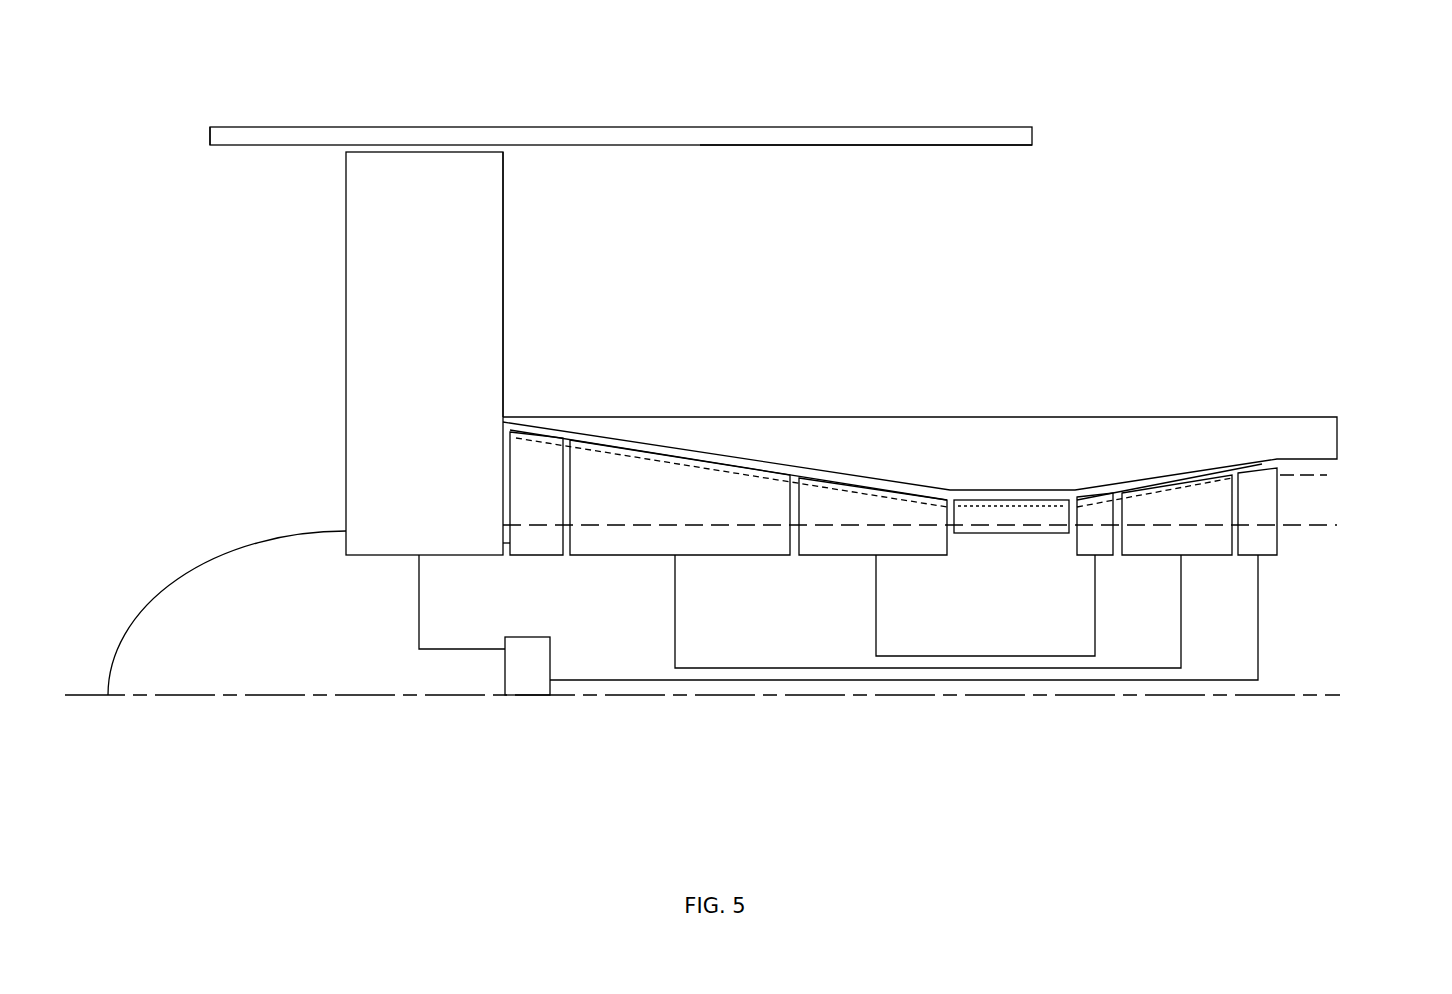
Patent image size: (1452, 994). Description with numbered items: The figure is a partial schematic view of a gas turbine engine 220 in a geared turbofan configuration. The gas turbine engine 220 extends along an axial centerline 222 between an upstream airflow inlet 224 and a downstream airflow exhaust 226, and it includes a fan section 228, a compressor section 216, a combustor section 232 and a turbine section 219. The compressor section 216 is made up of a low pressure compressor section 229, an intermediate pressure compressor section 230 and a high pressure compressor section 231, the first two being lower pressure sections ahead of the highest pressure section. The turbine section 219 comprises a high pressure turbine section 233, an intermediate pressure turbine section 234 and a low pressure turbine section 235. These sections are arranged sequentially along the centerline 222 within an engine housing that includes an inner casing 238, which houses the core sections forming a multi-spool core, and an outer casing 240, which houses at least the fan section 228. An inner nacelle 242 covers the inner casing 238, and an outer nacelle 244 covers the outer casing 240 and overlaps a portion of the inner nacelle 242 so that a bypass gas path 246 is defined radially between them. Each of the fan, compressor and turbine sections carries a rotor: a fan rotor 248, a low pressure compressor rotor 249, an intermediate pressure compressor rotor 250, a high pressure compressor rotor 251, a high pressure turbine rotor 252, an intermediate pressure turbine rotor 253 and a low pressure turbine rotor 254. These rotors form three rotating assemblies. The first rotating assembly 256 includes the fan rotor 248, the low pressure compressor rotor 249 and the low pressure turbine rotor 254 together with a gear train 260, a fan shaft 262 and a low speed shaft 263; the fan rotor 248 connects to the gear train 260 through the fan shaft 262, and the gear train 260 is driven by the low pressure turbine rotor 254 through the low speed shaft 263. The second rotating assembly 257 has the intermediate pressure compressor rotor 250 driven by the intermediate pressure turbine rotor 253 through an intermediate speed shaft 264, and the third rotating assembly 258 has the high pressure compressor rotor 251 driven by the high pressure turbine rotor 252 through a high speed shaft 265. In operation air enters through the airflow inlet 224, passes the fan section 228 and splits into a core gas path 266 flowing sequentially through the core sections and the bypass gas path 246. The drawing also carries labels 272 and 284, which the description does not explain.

The compressor section 216 is at (643, 335).
The turbine section 219 is at (1232, 357).
The gas turbine engine 220 is at (160, 105).
The axial centerline 222 is at (1342, 700).
The upstream airflow inlet 224 is at (209, 146).
The downstream airflow exhaust 226 is at (1330, 470).
The fan section 228 is at (505, 264).
The low pressure compressor section 229 is at (543, 425).
The intermediate pressure compressor section 230 is at (649, 445).
The high pressure compressor section 231 is at (867, 486).
The combustor section 232 is at (992, 494).
The high pressure turbine section 233 is at (1098, 488).
The intermediate pressure turbine section 234 is at (1180, 473).
The low pressure turbine section 235 is at (1256, 460).
The inner casing 238 is at (756, 460).
The outer casing 240 is at (640, 134).
The inner nacelle 242 is at (1321, 414).
The outer nacelle 244 is at (870, 124).
The bypass gas path 246 is at (742, 276).
The fan rotor 248 is at (403, 557).
The low pressure compressor rotor 249 is at (530, 557).
The intermediate pressure compressor rotor 250 is at (627, 557).
The high pressure compressor rotor 251 is at (825, 557).
The high pressure turbine rotor 252 is at (1076, 557).
The intermediate pressure turbine rotor 253 is at (1143, 557).
The low pressure turbine rotor 254 is at (1270, 557).
The first rotating assembly 256 is at (458, 655).
The second rotating assembly 257 is at (665, 648).
The third rotating assembly 258 is at (868, 640).
The gear train 260 is at (522, 680).
The fan shaft 262 is at (425, 655).
The low speed shaft 263 is at (588, 690).
The intermediate speed shaft 264 is at (760, 680).
The high speed shaft 265 is at (988, 655).
The core gas path 266 is at (1305, 508).
The port 272 is at (503, 483).
The combustor 284 is at (417, 365).